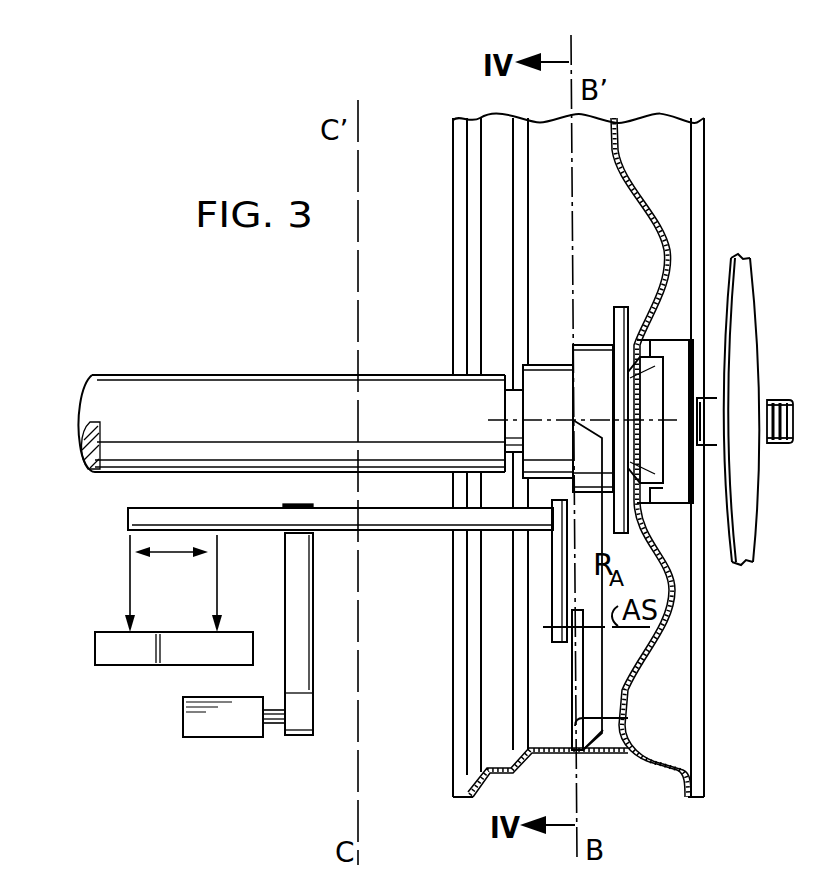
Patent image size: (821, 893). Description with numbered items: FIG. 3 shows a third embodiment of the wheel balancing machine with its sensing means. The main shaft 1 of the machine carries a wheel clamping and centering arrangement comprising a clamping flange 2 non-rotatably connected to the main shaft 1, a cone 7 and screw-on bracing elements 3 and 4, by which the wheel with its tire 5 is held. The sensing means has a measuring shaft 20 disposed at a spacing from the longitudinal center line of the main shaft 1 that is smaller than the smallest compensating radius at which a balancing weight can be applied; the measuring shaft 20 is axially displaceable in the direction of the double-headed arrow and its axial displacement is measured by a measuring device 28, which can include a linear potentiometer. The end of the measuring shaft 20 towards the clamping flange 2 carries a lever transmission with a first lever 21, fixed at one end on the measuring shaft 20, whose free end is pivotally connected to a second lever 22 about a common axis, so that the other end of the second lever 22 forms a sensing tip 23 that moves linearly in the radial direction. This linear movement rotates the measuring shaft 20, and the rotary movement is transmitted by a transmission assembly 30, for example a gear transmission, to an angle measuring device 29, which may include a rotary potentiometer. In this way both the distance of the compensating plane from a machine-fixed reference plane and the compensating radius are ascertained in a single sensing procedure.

The main shaft 1 is at (235, 413).
The clamping flange 2 is at (616, 296).
The screw-on bracing element 3 is at (685, 365).
The screw-on bracing element 4 is at (743, 298).
The tire 5 is at (652, 652).
The cone 7 is at (638, 400).
The measuring shaft 20 is at (395, 518).
The first lever 21 is at (560, 570).
The second lever 22 is at (628, 718).
The sensing tip 23 is at (578, 752).
The measuring device 28 is at (123, 650).
The angle measuring device 29 is at (225, 722).
The transmission assembly 30 is at (300, 635).